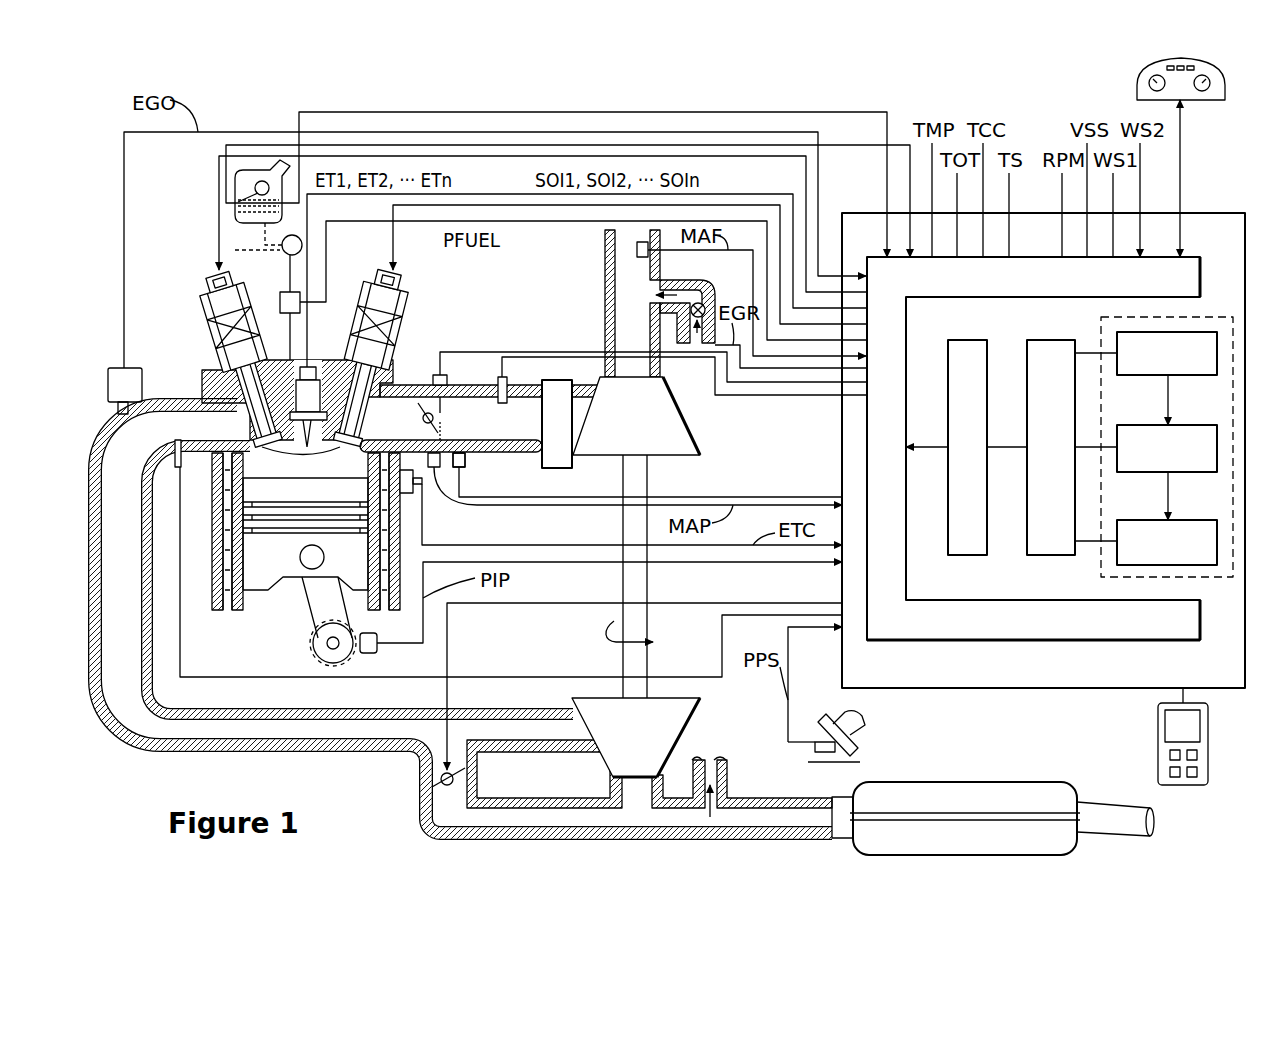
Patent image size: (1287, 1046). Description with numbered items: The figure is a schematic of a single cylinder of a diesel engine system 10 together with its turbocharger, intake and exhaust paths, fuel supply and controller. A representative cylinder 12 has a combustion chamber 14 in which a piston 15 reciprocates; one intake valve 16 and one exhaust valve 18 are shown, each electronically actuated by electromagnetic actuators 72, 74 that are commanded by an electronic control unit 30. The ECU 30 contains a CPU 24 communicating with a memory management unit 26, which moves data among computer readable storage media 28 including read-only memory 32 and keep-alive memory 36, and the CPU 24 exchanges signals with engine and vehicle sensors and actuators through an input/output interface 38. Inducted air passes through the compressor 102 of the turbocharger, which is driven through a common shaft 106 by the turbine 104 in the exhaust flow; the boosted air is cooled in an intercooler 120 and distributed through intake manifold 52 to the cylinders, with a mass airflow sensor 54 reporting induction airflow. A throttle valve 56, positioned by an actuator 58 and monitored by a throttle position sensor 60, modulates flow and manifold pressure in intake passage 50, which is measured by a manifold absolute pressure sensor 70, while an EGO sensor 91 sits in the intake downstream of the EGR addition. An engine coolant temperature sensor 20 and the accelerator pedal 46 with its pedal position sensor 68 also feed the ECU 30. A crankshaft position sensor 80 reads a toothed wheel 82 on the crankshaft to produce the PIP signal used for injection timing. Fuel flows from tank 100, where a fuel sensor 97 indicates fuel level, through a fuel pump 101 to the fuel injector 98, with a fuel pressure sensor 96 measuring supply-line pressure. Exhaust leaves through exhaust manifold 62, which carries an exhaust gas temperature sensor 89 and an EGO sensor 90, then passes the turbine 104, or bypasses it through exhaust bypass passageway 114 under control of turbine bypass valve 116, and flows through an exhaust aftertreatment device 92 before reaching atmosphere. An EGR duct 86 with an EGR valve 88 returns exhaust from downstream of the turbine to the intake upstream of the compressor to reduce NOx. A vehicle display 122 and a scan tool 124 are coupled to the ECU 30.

The engine system 10 is at (555, 97).
The cylinder 12 is at (247, 595).
The combustion chamber 14 is at (253, 480).
The piston 15 is at (282, 568).
The intake valve 16 is at (337, 457).
The exhaust valve 18 is at (257, 438).
The engine coolant temperature sensor 20 is at (405, 494).
The microprocessor (CPU) 24 is at (967, 340).
The memory management unit (MMU) 26 is at (1052, 340).
The computer readable storage media 28 is at (1188, 520).
The electronic control unit (ECU) 30 is at (1225, 213).
The read-only memory (ROM) 32 is at (1190, 332).
The keep-alive memory (KAM) 36 is at (1188, 425).
The input/output (I/O) interface 38 is at (970, 627).
The accelerator pedal 46 is at (865, 760).
The intake passage 50 is at (482, 431).
The intake manifold 52 is at (410, 430).
The mass airflow (MAF) sensor 54 is at (643, 258).
The throttle valve 56 is at (400, 478).
The throttle actuator 58 is at (468, 460).
The throttle position sensor 60 is at (435, 377).
The exhaust manifold 62 is at (152, 450).
The pedal position sensor 68 is at (812, 752).
The manifold absolute pressure (MAP) sensor 70 is at (462, 500).
The electromagnetic actuator (intake valve) 72 is at (413, 290).
The electromagnetic actuator (exhaust valve) 74 is at (213, 293).
The crankshaft position sensor 80 is at (367, 657).
The toothed wheel 82 is at (330, 655).
The EGR duct 86 is at (675, 290).
The EGR valve 88 is at (708, 287).
The exhaust gas temperature sensor 89 is at (175, 460).
The EGO sensor (exhaust) 90 is at (118, 358).
The EGO sensor (intake) 91 is at (500, 380).
The exhaust aftertreatment device 92 is at (1013, 782).
The fuel pressure sensor 96 is at (280, 300).
The fuel sensor 97 is at (262, 183).
The fuel injector 98 is at (312, 367).
The fuel tank 100 is at (267, 170).
The fuel pump 101 is at (282, 245).
The compressor 102 is at (687, 430).
The turbine 104 is at (597, 698).
The common shaft 106 is at (637, 667).
The exhaust bypass passageway 114 is at (447, 812).
The turbine bypass valve 116 is at (437, 777).
The intercooler (I/C) 120 is at (558, 468).
The vehicle display 122 is at (1137, 85).
The scan tool 124 is at (1158, 770).